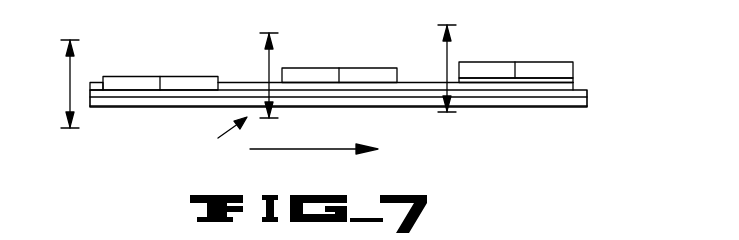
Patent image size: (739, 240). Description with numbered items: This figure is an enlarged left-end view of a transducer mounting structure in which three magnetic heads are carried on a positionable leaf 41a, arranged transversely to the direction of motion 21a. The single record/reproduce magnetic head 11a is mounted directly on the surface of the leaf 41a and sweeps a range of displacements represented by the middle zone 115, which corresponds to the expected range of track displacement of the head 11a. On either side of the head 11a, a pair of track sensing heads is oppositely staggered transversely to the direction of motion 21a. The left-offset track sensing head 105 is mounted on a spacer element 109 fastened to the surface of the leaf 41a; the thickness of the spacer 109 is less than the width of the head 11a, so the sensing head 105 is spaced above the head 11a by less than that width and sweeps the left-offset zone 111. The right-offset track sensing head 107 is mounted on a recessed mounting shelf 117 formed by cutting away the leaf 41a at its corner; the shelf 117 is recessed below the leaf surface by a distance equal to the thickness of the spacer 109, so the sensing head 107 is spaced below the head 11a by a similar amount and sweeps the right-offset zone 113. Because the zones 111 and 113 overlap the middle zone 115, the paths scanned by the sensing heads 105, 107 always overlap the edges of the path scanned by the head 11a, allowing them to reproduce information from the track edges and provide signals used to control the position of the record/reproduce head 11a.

The right-offset track sensing magnetic head 107 is at (135, 91).
The recessed mounting shelf 117 is at (100, 82).
The record/reproduce magnetic head 11a is at (336, 63).
The left-offset track sensing magnetic head 105 is at (542, 68).
The spacer element 109 is at (573, 82).
The right-offset zone 113 is at (68, 82).
The middle zone 115 is at (268, 63).
The left-offset zone 111 is at (446, 62).
The leaf 41a is at (213, 133).
The direction of motion 21a is at (278, 148).